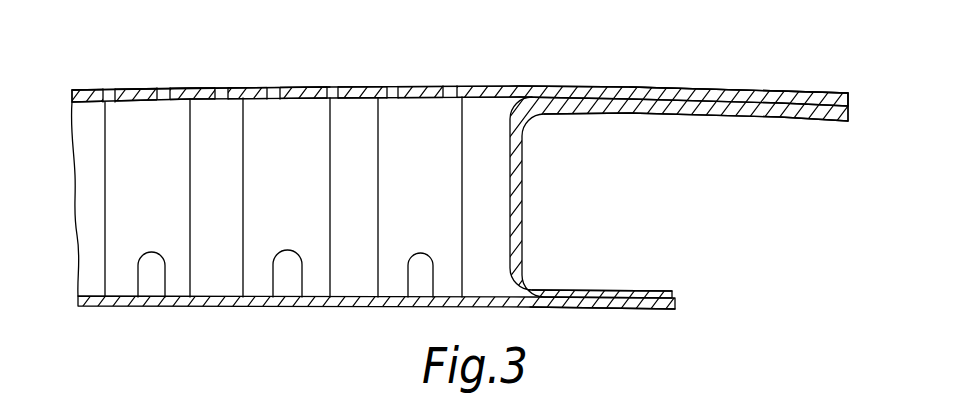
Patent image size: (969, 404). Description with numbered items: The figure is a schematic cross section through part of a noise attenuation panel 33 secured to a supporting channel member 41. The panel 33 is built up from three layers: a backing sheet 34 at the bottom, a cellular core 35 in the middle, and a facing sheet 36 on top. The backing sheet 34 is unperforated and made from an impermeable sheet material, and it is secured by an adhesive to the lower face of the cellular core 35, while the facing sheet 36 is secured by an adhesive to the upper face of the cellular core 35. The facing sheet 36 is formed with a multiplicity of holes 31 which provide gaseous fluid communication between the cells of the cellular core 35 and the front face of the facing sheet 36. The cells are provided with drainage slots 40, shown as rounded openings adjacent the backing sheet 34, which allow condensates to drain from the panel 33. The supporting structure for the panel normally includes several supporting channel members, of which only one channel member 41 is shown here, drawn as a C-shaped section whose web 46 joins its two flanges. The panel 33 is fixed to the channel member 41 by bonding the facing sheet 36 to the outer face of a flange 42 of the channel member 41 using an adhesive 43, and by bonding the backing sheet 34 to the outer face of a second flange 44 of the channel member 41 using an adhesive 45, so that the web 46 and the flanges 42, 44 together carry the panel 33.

The holes 31 is at (167, 89).
The noise attenuation panel 33 is at (420, 58).
The backing sheet 34 is at (219, 307).
The cellular core 35 is at (122, 159).
The facing sheet 36 is at (268, 79).
The drainage slots 40 is at (286, 258).
The channel member 41 is at (677, 135).
The flange 42 is at (824, 112).
The adhesive 43 is at (732, 108).
The flange 44 is at (639, 291).
The adhesive 45 is at (600, 311).
The C-shaped member web 46 is at (518, 222).